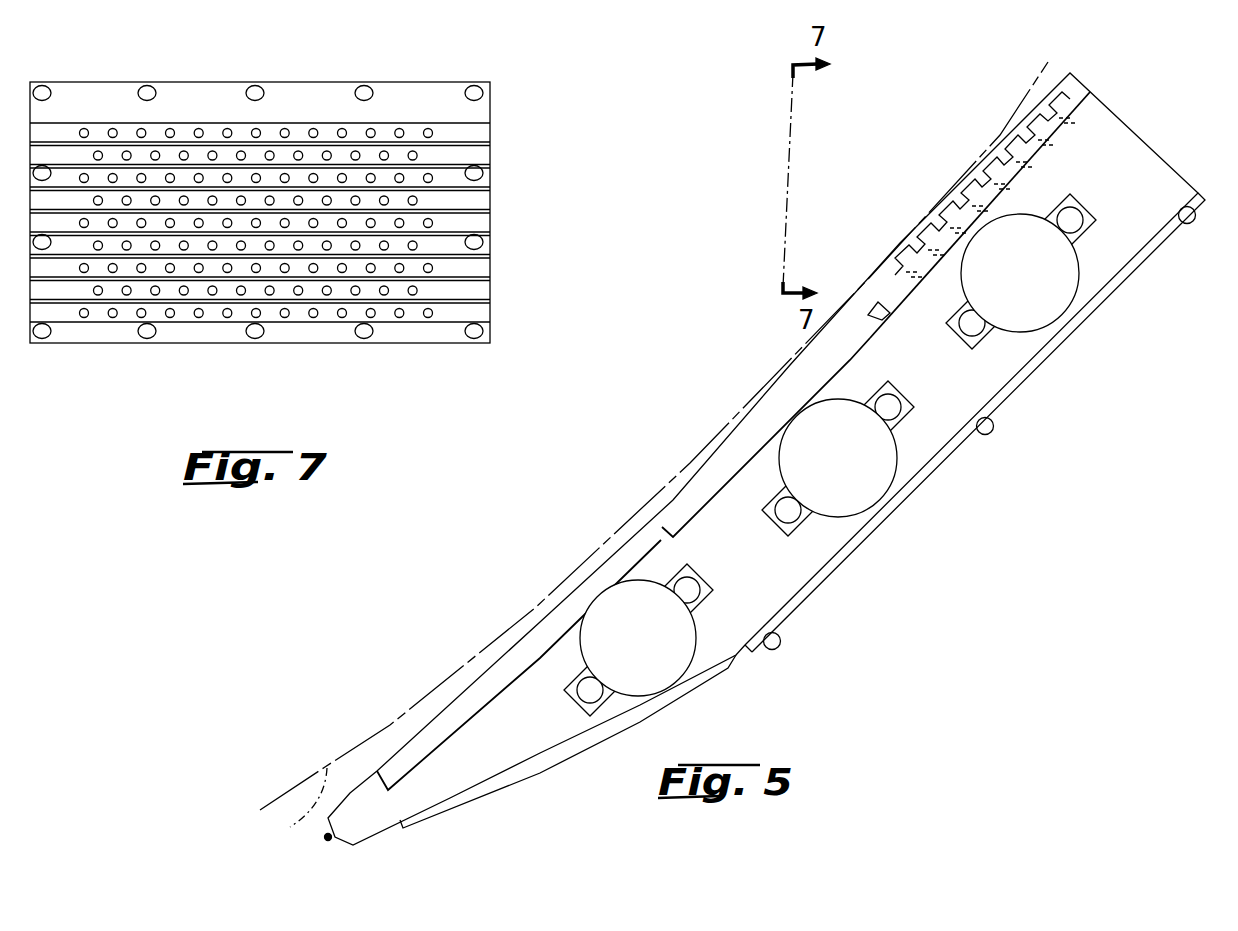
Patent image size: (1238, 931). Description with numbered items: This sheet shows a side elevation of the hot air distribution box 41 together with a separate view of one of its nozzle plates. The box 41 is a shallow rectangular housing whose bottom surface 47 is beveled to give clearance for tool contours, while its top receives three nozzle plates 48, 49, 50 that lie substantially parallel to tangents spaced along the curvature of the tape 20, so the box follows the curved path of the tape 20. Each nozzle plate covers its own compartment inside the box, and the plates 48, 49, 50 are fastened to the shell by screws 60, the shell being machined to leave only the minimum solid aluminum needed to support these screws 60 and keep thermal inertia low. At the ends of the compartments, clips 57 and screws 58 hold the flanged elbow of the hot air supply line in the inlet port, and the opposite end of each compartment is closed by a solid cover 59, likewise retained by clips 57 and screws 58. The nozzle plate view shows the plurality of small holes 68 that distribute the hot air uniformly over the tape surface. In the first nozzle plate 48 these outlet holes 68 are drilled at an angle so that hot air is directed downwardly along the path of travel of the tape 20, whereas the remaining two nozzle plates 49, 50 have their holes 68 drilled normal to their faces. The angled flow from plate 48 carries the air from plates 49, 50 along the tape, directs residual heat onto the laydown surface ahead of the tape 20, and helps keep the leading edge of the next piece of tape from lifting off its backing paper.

In FIG. 5, the tape 20 is at (292, 826).
In FIG. 5, the hot air distribution box 41 is at (327, 840).
In FIG. 5, the bottom surface 47 is at (383, 837).
In FIG. 7, the first nozzle plate 48 is at (308, 345).
In FIG. 5, the first nozzle plate 48 is at (980, 172).
In FIG. 5, the nozzle plate 49 is at (722, 457).
In FIG. 5, the nozzle plate 50 is at (510, 652).
In FIG. 5, the clips 57 is at (712, 598).
In FIG. 5, the screws 58 is at (703, 577).
In FIG. 5, the solid cover 59 is at (698, 630).
In FIG. 7, the screws 60 is at (483, 345).
In FIG. 7, the small holes 68 is at (198, 317).